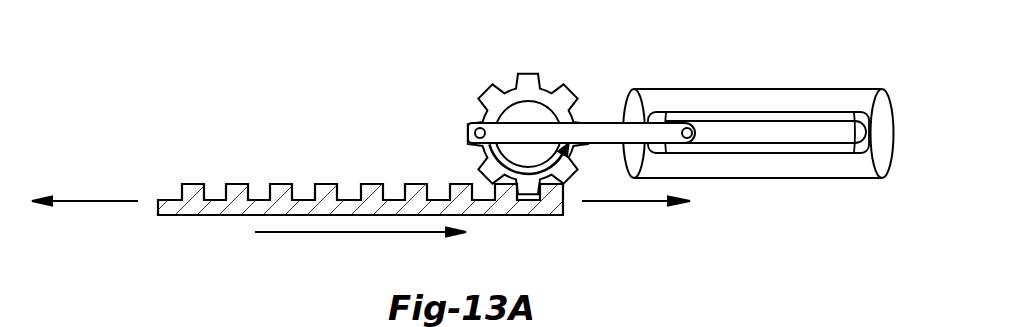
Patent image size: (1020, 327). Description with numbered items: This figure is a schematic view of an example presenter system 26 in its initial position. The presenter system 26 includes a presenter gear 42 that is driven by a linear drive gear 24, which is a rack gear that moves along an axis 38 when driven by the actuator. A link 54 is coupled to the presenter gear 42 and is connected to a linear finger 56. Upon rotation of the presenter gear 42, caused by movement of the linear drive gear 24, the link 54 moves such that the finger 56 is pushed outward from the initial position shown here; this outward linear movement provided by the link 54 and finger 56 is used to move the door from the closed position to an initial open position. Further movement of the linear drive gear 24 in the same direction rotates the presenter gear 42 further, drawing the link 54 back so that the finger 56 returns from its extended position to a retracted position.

The linear drive gear 24 is at (212, 207).
The presenter system 26 is at (806, 71).
The axis 38 is at (85, 201).
The presenter gear 42 is at (497, 100).
The link 54 is at (604, 128).
The linear finger 56 is at (748, 118).